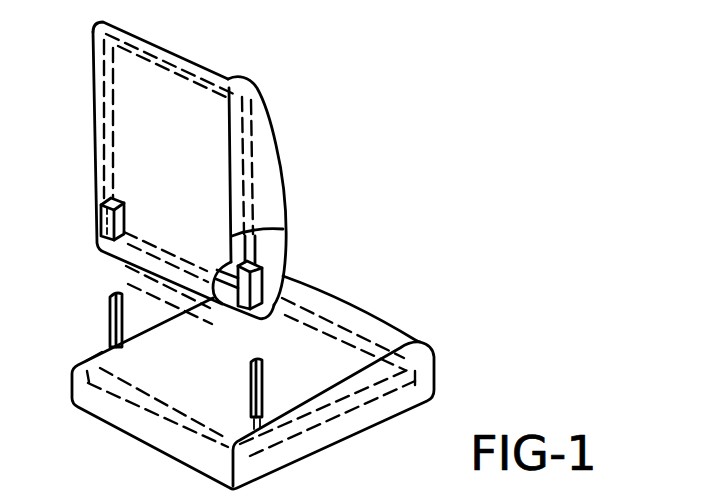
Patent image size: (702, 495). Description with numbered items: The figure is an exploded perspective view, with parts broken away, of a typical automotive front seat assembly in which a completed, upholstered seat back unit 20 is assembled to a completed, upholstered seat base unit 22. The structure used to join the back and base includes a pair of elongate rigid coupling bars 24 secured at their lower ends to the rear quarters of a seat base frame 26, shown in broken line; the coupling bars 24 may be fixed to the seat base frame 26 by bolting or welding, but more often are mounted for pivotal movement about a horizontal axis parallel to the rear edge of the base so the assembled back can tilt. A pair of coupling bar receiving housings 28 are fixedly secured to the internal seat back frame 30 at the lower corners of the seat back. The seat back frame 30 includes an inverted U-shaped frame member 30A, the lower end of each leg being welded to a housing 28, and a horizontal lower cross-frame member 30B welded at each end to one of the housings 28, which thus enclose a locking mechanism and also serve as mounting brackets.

The seat back unit 20 is at (277, 91).
The seat base unit 22 is at (452, 283).
The coupling bars 24 is at (116, 300).
The seat base frame 26 is at (318, 432).
The coupling bar receiving housings 28 is at (101, 212).
The seat back frame 30 is at (250, 167).
The inverted U-shaped frame member 30A is at (152, 62).
The lower cross-frame member 30B is at (173, 254).